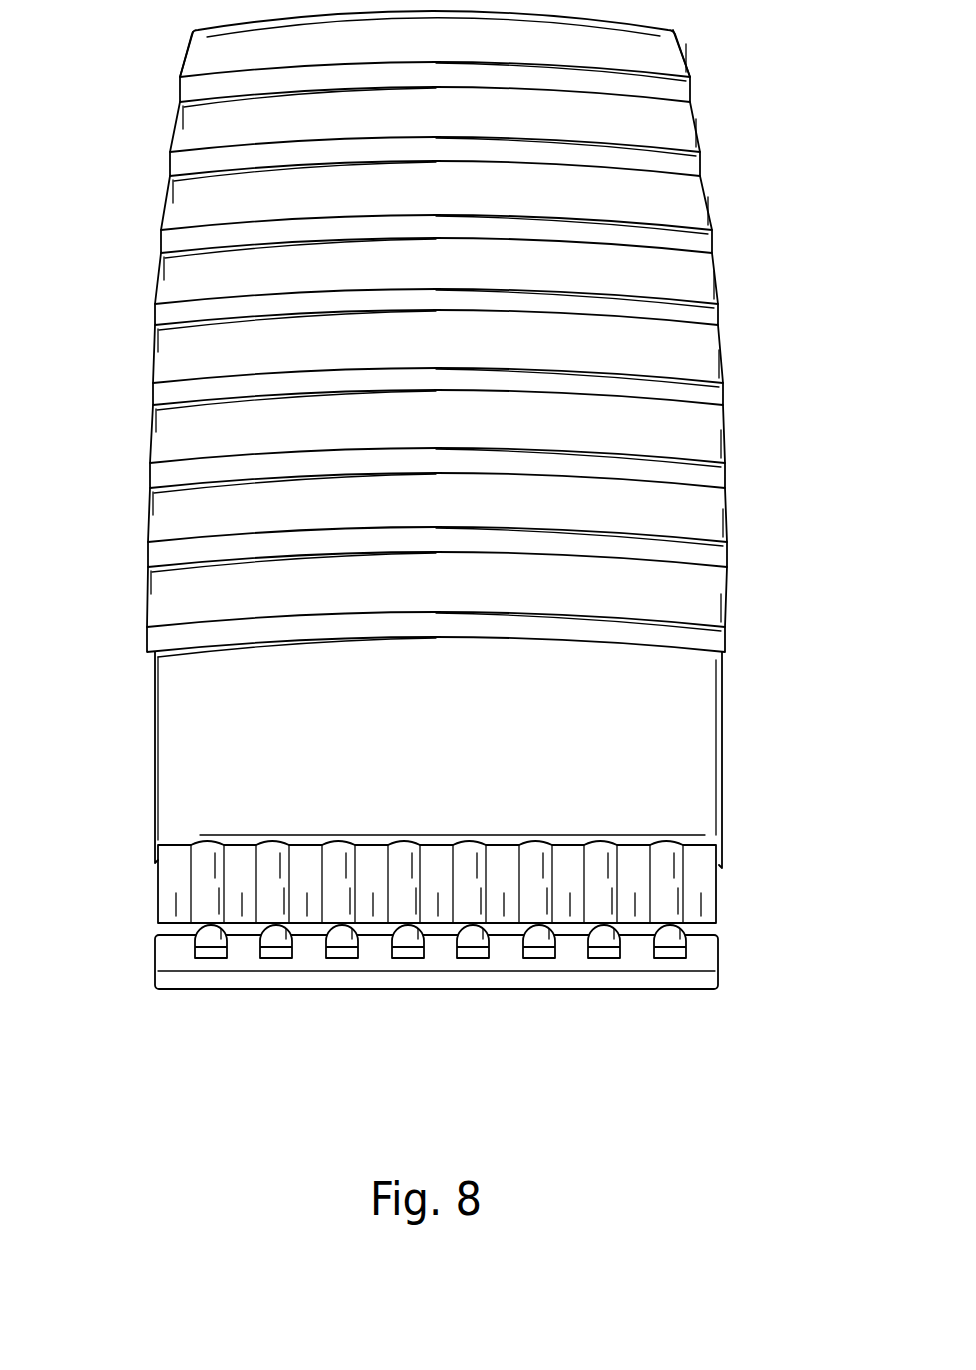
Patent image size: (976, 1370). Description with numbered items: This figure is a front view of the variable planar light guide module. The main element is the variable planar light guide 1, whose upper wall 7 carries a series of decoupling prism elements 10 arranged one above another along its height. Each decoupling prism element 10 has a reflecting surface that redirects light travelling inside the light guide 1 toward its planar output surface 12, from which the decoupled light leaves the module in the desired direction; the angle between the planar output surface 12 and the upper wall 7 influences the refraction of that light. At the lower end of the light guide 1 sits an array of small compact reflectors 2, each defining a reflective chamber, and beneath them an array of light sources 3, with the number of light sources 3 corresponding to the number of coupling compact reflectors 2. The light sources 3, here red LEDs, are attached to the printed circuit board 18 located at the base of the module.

The variable planar light guide 1 is at (722, 747).
The decoupling prism element 10 is at (722, 642).
The planar output surface 12 is at (218, 645).
The upper wall 7 is at (217, 735).
The small compact reflector 2 is at (160, 888).
The light source 3 is at (603, 953).
The printed circuit board 18 is at (506, 953).